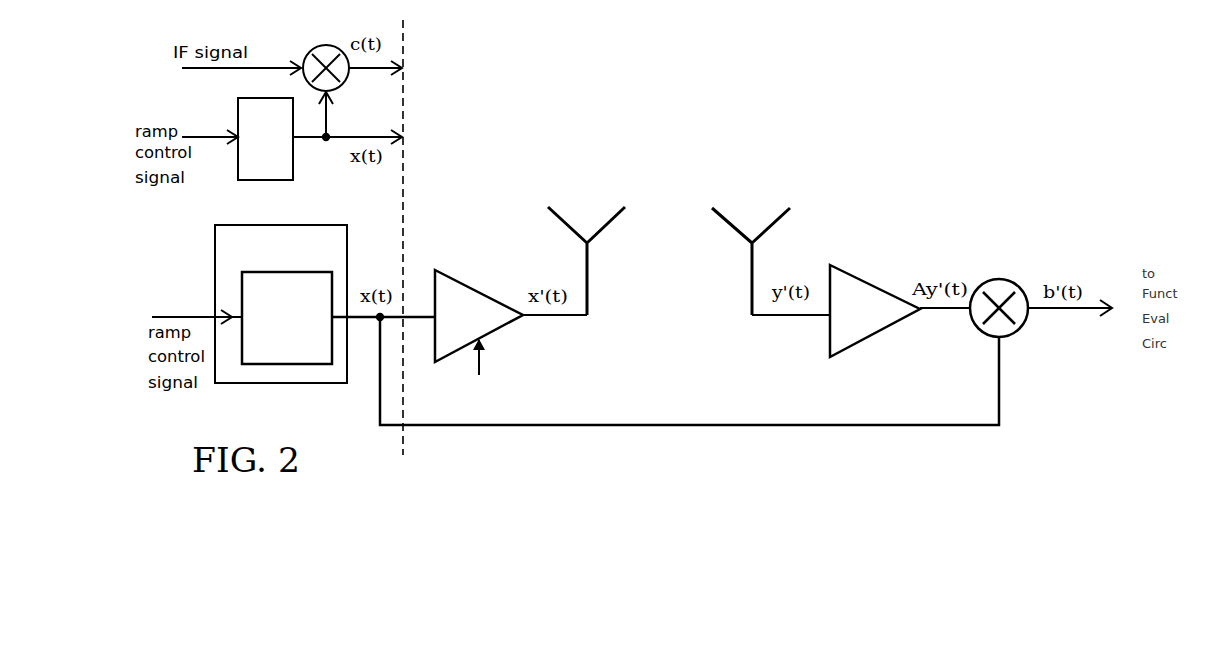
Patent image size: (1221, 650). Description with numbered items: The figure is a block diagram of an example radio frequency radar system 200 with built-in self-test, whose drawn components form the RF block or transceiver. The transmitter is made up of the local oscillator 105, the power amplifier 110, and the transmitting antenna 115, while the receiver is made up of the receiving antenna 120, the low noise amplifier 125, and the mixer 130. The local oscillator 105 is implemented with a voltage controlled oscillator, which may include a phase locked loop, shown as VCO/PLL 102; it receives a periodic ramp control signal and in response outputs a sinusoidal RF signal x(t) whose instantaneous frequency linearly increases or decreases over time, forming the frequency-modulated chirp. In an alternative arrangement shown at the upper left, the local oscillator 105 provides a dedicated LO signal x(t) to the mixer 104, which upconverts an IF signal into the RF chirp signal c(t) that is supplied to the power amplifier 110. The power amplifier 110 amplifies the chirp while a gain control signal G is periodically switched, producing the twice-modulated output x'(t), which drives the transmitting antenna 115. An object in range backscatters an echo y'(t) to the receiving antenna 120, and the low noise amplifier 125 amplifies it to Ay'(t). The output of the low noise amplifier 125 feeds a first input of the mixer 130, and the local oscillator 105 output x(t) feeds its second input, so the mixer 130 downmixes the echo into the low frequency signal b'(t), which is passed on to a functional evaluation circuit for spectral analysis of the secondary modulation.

The voltage controlled oscillator / phase locked loop 102 is at (287, 318).
The mixer 104 is at (313, 60).
The local oscillator 105 is at (281, 240).
The power amplifier 110 is at (489, 336).
The transmitting antenna 115 is at (595, 261).
The receiving antenna 120 is at (759, 261).
The low noise amplifier 125 is at (875, 312).
The mixer 130 is at (1012, 318).
The radio frequency radar system 200 is at (970, 192).